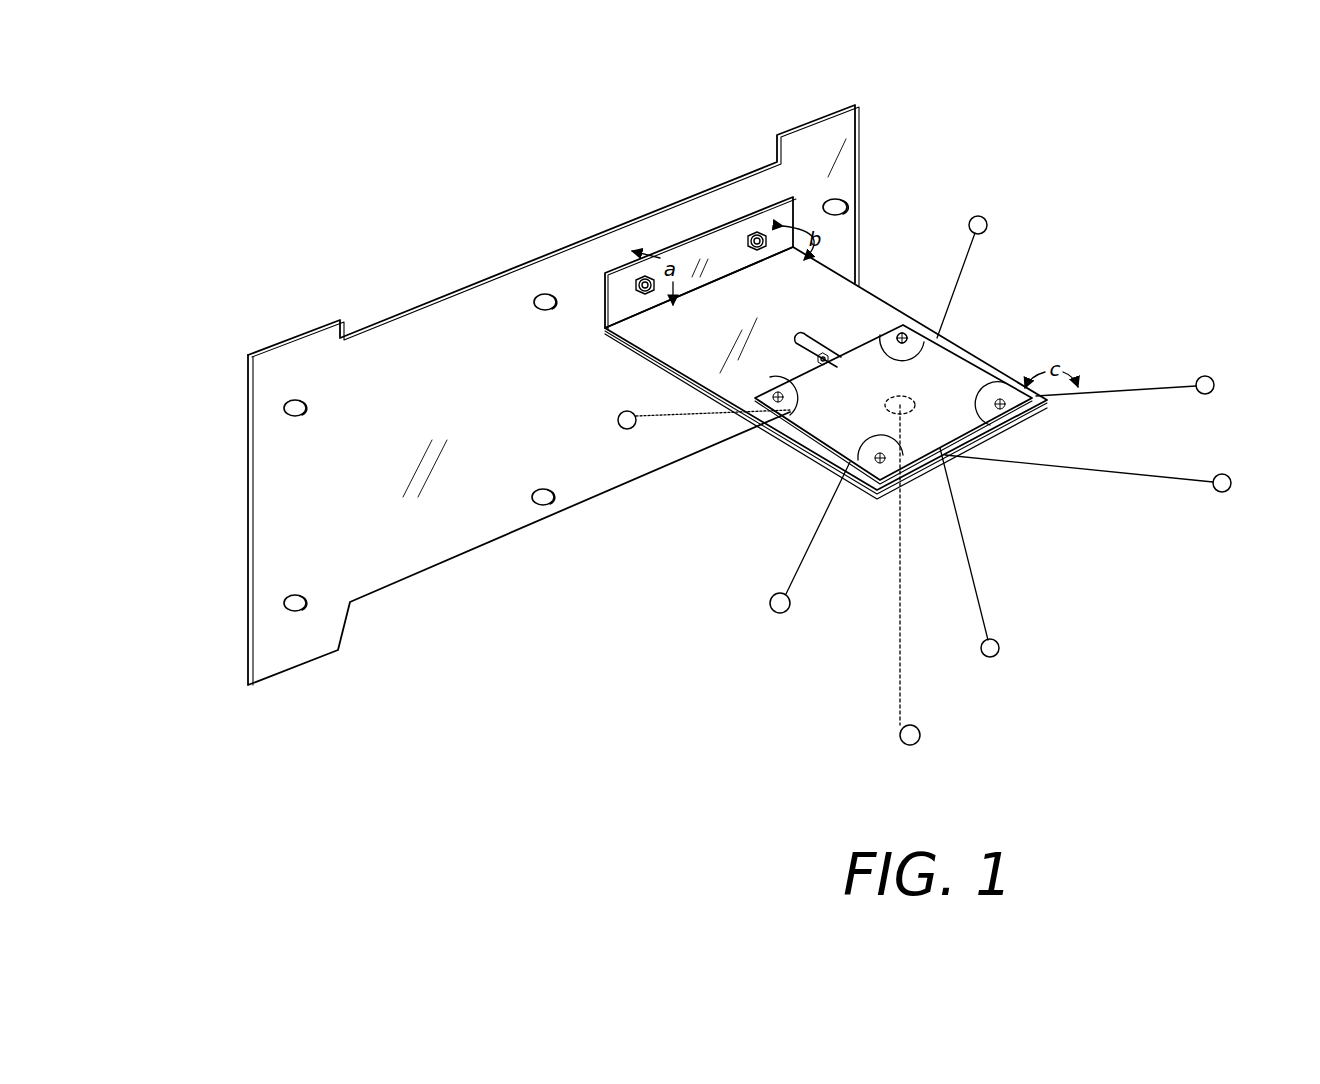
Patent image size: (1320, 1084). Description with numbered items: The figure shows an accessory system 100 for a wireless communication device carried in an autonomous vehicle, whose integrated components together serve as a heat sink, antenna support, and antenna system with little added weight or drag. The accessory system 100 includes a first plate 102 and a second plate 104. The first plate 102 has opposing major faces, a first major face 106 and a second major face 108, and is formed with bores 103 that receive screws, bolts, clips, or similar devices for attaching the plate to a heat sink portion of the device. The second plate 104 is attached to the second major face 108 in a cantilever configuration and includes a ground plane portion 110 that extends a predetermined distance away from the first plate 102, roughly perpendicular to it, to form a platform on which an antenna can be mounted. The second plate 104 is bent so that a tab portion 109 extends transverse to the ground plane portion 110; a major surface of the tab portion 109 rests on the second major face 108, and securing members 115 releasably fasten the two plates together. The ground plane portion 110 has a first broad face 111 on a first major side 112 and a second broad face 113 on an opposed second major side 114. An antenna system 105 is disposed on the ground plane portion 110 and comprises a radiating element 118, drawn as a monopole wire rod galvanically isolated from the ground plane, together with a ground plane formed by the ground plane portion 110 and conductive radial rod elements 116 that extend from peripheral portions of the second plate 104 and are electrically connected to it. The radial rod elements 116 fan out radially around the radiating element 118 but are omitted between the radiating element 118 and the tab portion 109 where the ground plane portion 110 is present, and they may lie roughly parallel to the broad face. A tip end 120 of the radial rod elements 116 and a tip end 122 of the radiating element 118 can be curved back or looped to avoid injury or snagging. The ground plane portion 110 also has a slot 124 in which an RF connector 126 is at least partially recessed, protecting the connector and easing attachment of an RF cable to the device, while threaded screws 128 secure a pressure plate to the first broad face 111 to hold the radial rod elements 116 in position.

The accessory system 100 is at (531, 686).
The first plate 102 is at (553, 395).
The bores 103 is at (300, 416).
The second plate 104 is at (826, 370).
The antenna system 105 is at (1061, 322).
The first major face 106 is at (238, 443).
The second major face 108 is at (270, 503).
The tab portion 109 is at (725, 252).
The ground plane portion 110 is at (880, 274).
The first broad face 111 is at (711, 332).
The first major side 112 is at (664, 341).
The second broad face 113 is at (807, 457).
The second major side 114 is at (655, 375).
The securing members 115 is at (636, 288).
The conductive radial rod elements 116 is at (965, 290).
The radiating element 118 is at (903, 650).
The tip end 120 is at (1214, 388).
The tip end 122 is at (920, 738).
The slot 124 is at (809, 346).
The RF connector 126 is at (818, 361).
The threaded screws 128 is at (902, 330).